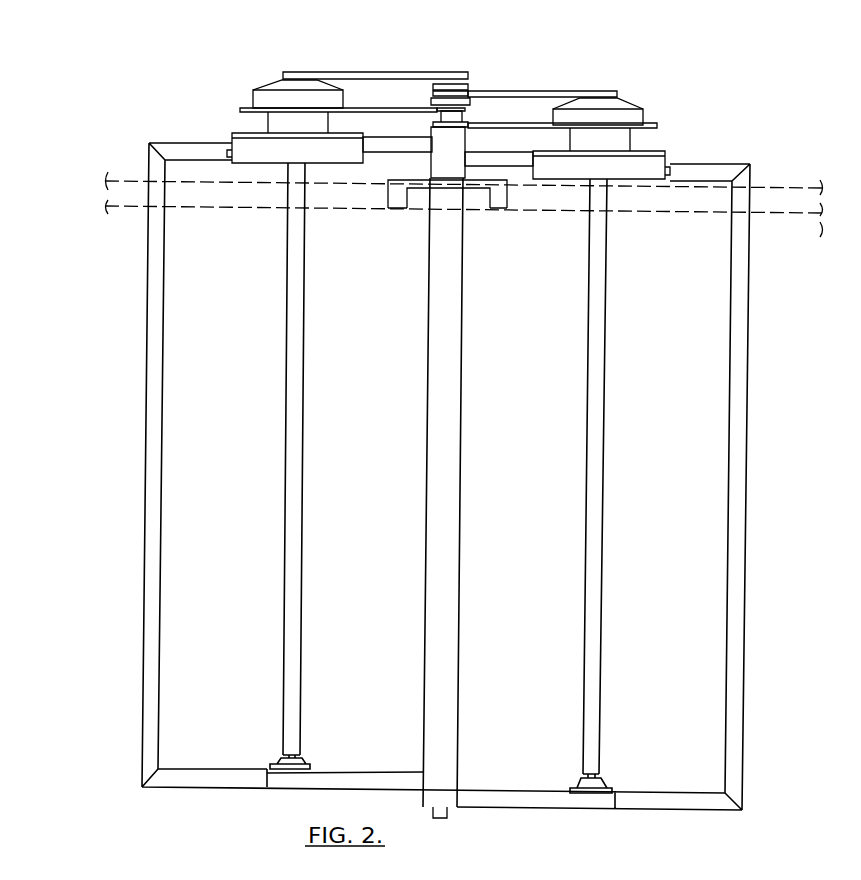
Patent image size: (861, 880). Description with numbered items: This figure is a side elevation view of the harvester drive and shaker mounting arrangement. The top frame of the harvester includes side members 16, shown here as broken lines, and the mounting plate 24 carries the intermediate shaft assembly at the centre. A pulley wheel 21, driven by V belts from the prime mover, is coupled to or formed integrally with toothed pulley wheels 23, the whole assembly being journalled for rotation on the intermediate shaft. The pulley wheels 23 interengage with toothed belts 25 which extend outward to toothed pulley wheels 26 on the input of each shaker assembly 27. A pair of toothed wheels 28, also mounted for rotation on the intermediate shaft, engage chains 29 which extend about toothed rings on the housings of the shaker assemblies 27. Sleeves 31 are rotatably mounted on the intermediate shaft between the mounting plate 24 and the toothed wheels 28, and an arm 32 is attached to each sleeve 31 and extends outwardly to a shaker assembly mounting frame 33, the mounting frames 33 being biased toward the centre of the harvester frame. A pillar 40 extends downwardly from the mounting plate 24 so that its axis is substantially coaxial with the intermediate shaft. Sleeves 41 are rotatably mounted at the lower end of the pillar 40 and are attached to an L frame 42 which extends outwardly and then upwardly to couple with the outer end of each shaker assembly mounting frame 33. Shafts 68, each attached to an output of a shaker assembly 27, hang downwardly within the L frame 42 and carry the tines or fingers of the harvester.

The side members 16 is at (213, 197).
The pulley wheel 21 is at (465, 95).
The pulley wheels 23 is at (462, 94).
The mounting plate 24 is at (493, 190).
The toothed belts 25 is at (352, 77).
The toothed pulley wheels 26 is at (307, 72).
The shaker assembly 27 is at (269, 74).
The toothed wheels 28 is at (462, 115).
The chains 29 is at (382, 108).
The sleeves 31 is at (445, 163).
The arm 32 is at (383, 147).
The shaker assembly mounting frame 33 is at (250, 145).
The pillar 40 is at (458, 481).
The sleeves 41 is at (443, 797).
The L frame 42 is at (145, 722).
The shafts 68 is at (298, 479).